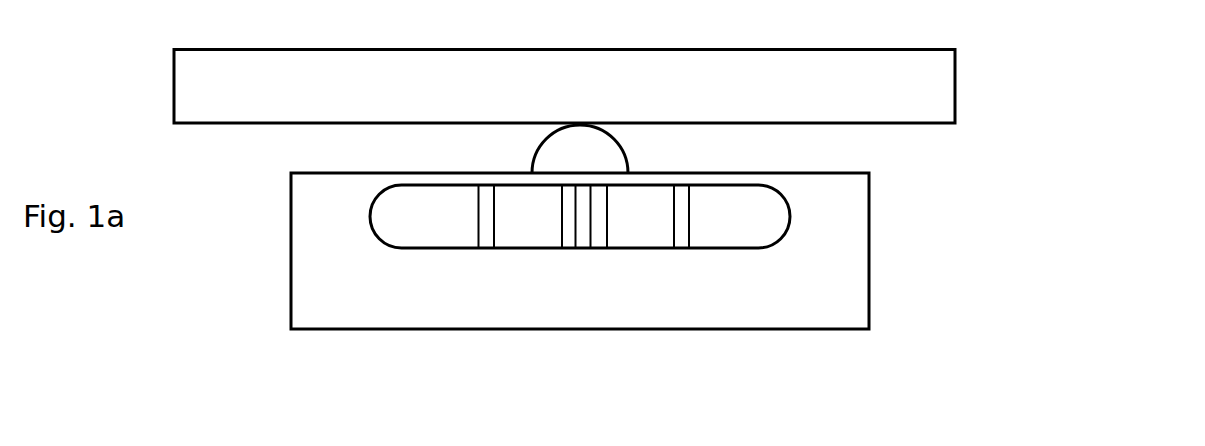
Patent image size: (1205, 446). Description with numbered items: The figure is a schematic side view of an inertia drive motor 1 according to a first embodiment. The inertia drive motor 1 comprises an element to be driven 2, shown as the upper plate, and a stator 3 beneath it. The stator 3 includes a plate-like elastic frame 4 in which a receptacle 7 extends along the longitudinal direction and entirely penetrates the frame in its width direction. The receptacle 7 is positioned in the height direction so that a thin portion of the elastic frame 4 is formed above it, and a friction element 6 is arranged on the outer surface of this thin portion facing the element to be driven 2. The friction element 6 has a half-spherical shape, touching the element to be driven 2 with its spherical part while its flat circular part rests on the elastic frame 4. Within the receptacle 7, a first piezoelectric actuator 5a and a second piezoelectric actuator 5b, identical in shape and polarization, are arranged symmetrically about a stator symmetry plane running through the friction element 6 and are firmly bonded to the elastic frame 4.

The inertia drive motor 1 is at (1067, 53).
The element to be driven 2 is at (917, 93).
The stator 3 is at (932, 200).
The elastic frame 4 is at (838, 273).
The first piezoelectric actuator 5a is at (517, 215).
The second piezoelectric actuator 5b is at (632, 215).
The friction element 6 is at (598, 149).
The receptacle 7 is at (442, 233).